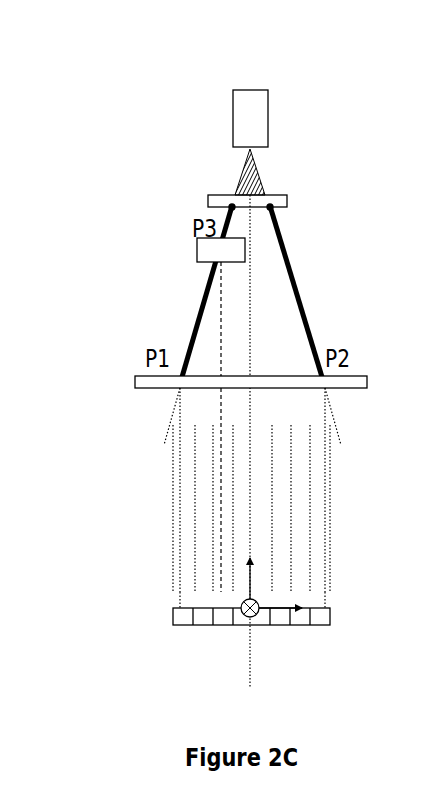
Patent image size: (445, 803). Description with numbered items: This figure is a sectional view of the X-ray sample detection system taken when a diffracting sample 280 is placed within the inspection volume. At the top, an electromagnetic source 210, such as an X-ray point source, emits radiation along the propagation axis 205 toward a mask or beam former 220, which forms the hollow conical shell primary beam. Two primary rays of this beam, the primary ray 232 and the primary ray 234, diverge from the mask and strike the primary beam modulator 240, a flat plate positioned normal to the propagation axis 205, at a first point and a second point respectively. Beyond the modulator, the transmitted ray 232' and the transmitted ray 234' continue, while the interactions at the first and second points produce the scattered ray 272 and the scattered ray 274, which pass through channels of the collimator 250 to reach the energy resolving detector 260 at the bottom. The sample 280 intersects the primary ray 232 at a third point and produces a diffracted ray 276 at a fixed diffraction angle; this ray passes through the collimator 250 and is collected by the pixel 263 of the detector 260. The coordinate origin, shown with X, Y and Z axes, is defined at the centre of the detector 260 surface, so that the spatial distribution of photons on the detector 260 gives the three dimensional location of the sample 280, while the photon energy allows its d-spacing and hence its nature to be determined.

The propagation axis 205 is at (250, 672).
The electromagnetic source 210 is at (268, 115).
The mask or beam former 220 is at (287, 197).
The primary ray 232 is at (175, 290).
The primary ray 234 is at (314, 290).
The transmitted ray 232' is at (132, 490).
The transmitted ray 234' is at (371, 490).
The primary beam modulator 240 is at (356, 376).
The collimator 250 is at (333, 512).
The energy resolving detector 260 is at (173, 612).
The pixel 263 is at (229, 626).
The scattered ray 272 is at (178, 603).
The scattered ray 274 is at (328, 599).
The diffracted ray 276 is at (220, 313).
The diffracting sample 280 is at (197, 245).